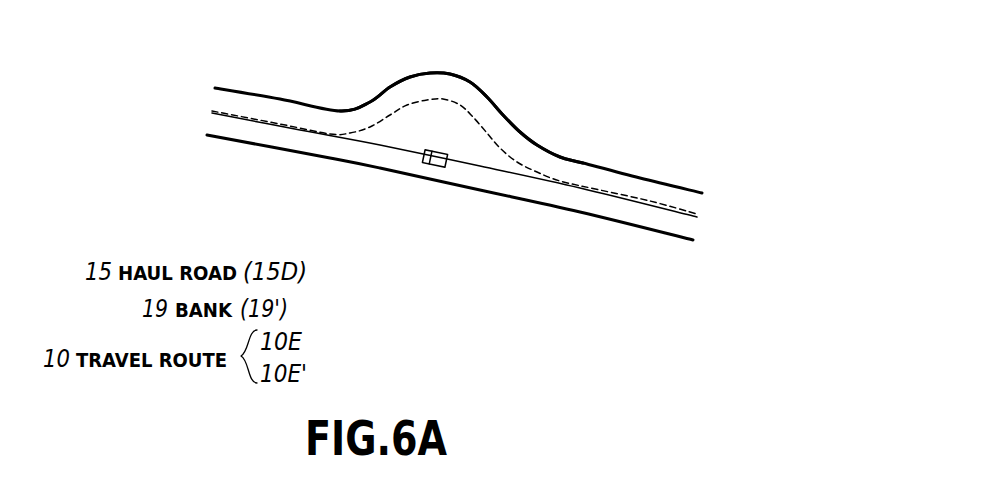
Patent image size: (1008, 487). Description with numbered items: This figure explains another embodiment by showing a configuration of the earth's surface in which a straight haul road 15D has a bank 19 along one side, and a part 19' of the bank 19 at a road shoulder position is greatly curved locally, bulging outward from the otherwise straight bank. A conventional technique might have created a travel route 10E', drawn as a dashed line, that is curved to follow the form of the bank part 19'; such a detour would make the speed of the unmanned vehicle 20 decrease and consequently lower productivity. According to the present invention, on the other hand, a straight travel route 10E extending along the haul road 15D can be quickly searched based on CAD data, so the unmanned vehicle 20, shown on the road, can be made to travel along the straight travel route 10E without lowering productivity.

The straight travel route 10E is at (454, 186).
The travel route 10E' is at (454, 123).
The straight haul road 15D is at (250, 142).
The bank 19 is at (458, 133).
The part of the bank 19' is at (461, 100).
The unmanned vehicle 20 is at (432, 167).